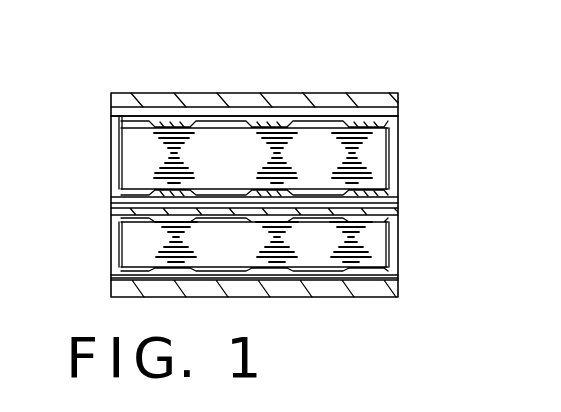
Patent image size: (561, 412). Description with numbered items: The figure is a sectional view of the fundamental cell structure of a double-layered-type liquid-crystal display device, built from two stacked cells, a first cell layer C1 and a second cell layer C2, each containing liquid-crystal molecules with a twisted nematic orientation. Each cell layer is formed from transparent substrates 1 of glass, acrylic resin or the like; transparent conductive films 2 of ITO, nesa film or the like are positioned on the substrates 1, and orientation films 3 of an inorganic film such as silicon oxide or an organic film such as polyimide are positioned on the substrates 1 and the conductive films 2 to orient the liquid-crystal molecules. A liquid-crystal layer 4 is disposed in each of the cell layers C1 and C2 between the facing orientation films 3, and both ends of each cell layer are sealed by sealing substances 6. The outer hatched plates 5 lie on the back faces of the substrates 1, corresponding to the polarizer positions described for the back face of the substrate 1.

The transparent substrate 1 is at (113, 270).
The transparent conductive film 2 is at (268, 192).
The orientation film 3 is at (398, 122).
The liquid-crystal layer 4 is at (303, 252).
The polarizer plate 5 is at (400, 100).
The sealing substance 6 is at (398, 233).
The first cell layer C1 is at (378, 94).
The second cell layer C2 is at (318, 167).